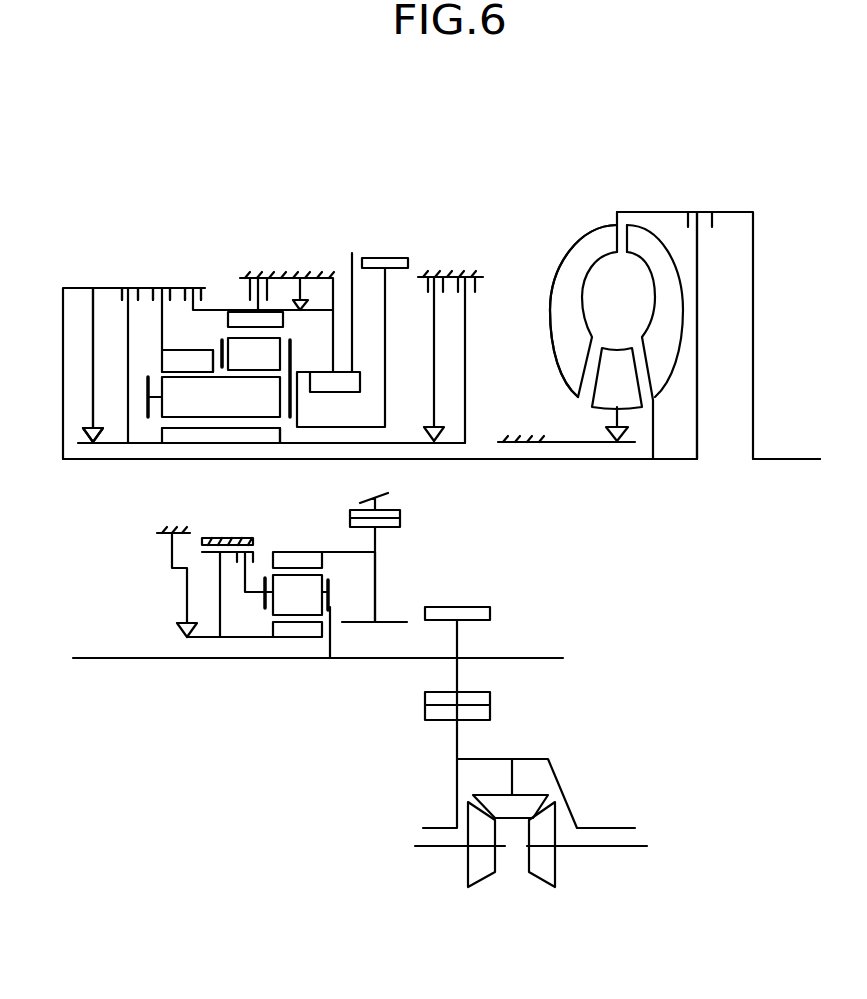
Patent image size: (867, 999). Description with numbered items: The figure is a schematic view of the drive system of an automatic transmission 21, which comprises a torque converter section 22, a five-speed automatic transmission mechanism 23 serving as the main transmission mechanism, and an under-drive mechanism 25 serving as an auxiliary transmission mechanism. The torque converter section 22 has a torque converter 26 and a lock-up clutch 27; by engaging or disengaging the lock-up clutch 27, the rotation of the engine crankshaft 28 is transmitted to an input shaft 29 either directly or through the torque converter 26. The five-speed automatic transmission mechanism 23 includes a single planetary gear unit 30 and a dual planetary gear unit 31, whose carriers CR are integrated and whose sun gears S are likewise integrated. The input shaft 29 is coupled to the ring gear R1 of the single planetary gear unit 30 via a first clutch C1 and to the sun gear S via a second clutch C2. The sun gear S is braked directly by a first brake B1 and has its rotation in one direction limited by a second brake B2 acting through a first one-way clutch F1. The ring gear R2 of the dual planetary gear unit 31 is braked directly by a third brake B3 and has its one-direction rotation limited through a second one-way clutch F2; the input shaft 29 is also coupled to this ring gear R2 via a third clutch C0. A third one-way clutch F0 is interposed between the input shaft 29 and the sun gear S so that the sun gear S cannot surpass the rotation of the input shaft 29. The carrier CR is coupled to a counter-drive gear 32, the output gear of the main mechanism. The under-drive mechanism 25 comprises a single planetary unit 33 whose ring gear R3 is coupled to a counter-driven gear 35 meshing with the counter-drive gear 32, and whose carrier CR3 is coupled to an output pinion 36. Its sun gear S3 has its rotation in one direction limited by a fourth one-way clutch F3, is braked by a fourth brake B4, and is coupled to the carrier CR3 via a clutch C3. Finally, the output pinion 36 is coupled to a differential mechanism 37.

The automatic transmission 21 is at (108, 170).
The torque converter section 22 is at (665, 197).
The five-speed automatic transmission mechanism 23 is at (277, 247).
The under-drive mechanism 25 is at (107, 555).
The torque converter 26 is at (585, 255).
The lock-up clutch 27 is at (712, 227).
The engine crankshaft 28 is at (797, 457).
The input shaft 29 is at (608, 460).
The single planetary gear unit 30 is at (185, 310).
The dual planetary gear unit 31 is at (237, 305).
The counter-drive gear 32 is at (390, 258).
The single planetary unit 33 is at (294, 550).
The counter drive gear 35 is at (397, 532).
The output pinion 36 is at (473, 607).
The differential mechanism 37 is at (562, 767).
The ring gear R1 is at (203, 362).
The ring gear R2 is at (273, 322).
The ring gear R3 is at (312, 558).
The sun gear S is at (203, 445).
The sun gear S3 is at (300, 637).
The carrier CR is at (312, 350).
The carrier CR3 is at (348, 588).
The third clutch C0 is at (196, 278).
The first clutch C1 is at (161, 278).
The second clutch C2 is at (129, 278).
The clutch C3 is at (242, 594).
The first brake B1 is at (467, 345).
The second brake B2 is at (435, 270).
The third brake B3 is at (255, 274).
The fourth brake B4 is at (237, 550).
The third one-way clutch F0 is at (103, 365).
The first one-way clutch F1 is at (423, 359).
The second one-way clutch F2 is at (297, 274).
The fourth one-way clutch F3 is at (213, 582).